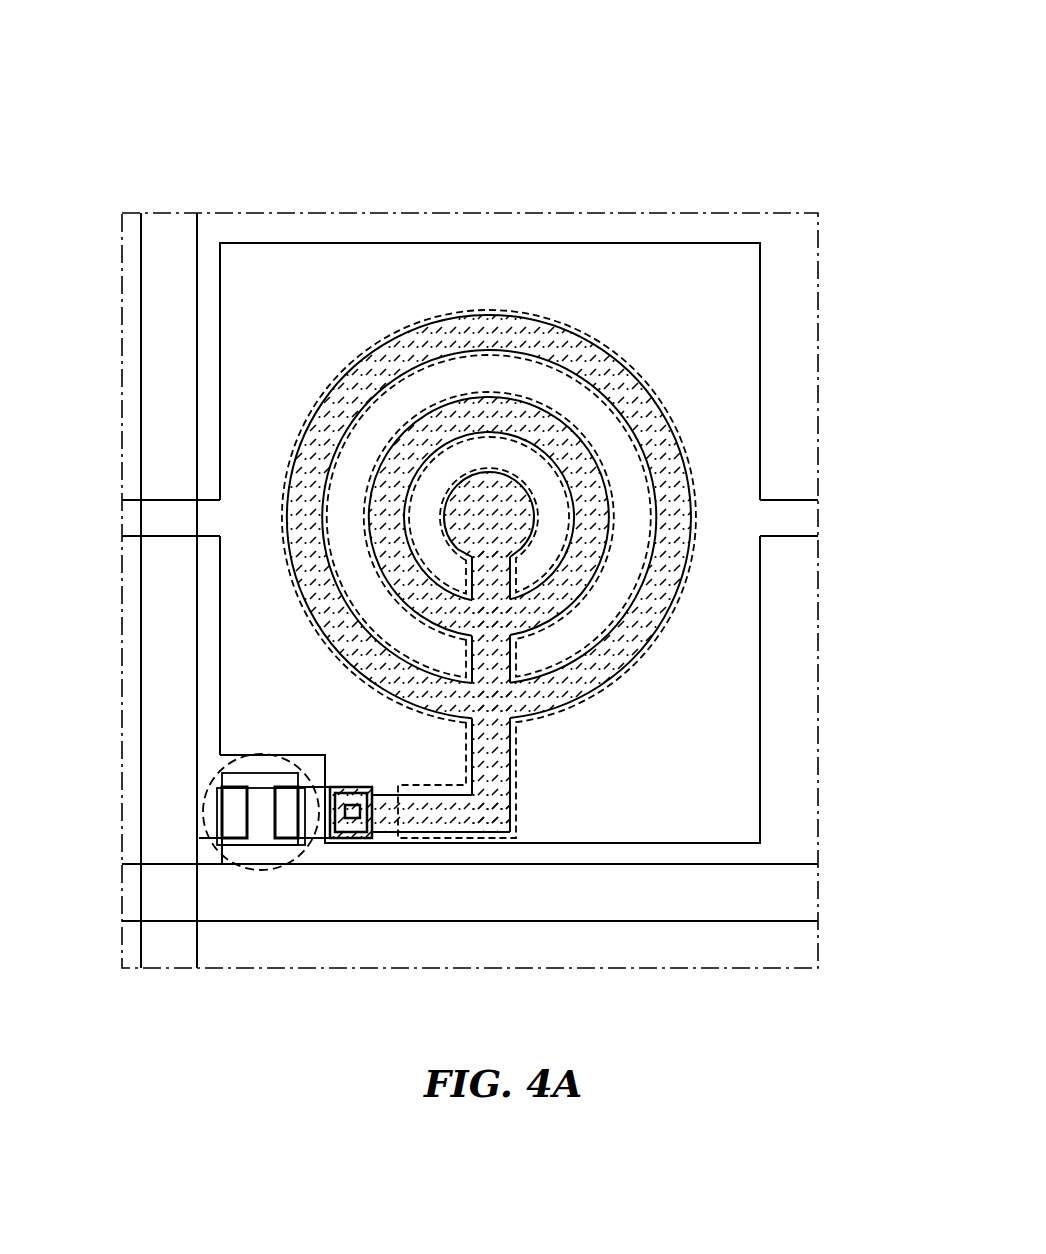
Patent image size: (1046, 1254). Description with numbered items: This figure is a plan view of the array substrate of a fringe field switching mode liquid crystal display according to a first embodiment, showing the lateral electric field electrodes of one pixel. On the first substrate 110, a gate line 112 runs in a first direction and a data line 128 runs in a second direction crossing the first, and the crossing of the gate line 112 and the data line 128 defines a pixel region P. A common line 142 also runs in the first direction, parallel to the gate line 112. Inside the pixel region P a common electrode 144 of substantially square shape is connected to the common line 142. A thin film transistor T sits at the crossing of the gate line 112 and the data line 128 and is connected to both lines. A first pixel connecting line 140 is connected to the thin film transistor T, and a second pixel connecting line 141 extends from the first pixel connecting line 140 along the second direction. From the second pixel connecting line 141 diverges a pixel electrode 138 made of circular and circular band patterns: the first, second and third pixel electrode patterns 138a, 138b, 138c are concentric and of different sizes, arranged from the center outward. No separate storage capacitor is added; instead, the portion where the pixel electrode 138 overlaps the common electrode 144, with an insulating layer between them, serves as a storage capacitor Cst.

The first substrate 110 is at (742, 213).
The gate line 112 is at (818, 864).
The data line 128 is at (141, 975).
The pixel electrode 138 is at (491, 441).
The first pixel electrode pattern 138a is at (502, 483).
The second pixel electrode pattern 138b is at (498, 407).
The third pixel electrode pattern 138c is at (470, 325).
The first pixel connecting line 140 is at (440, 813).
The second pixel connecting line 141 is at (509, 652).
The common line 142 is at (818, 500).
The common electrode 144 is at (252, 268).
The pixel region P is at (208, 291).
The thin film transistor T is at (268, 862).
The storage capacitor Cst is at (598, 441).